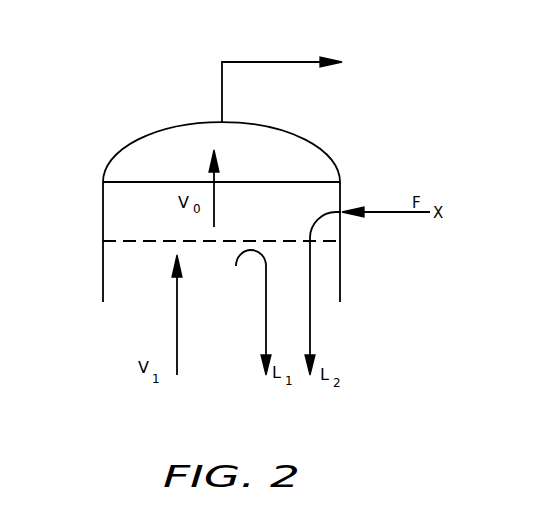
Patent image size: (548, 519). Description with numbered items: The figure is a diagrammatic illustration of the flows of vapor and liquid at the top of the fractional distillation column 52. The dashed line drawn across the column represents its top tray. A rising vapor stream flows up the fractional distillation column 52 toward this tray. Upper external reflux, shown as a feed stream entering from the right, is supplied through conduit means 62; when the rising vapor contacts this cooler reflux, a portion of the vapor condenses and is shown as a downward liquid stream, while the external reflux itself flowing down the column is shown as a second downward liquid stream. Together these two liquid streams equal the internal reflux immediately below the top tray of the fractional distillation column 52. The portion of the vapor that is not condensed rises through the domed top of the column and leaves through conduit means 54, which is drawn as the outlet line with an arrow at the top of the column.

The fractional distillation column 52 is at (103, 205).
The conduit means 54 is at (265, 62).
The conduit means 62 is at (395, 213).